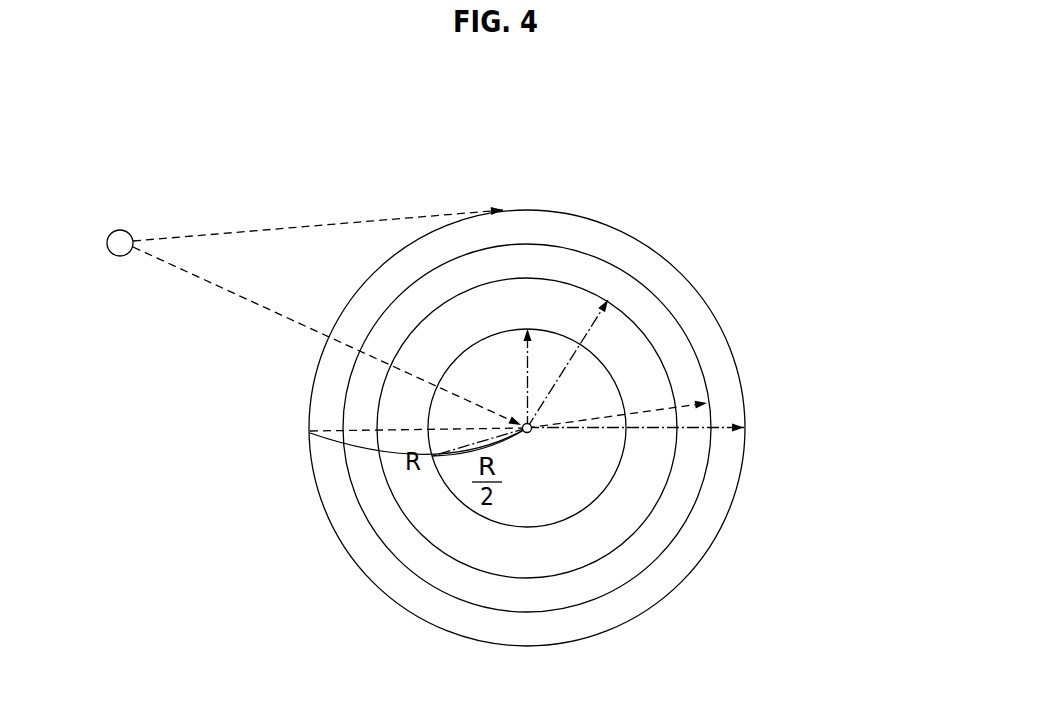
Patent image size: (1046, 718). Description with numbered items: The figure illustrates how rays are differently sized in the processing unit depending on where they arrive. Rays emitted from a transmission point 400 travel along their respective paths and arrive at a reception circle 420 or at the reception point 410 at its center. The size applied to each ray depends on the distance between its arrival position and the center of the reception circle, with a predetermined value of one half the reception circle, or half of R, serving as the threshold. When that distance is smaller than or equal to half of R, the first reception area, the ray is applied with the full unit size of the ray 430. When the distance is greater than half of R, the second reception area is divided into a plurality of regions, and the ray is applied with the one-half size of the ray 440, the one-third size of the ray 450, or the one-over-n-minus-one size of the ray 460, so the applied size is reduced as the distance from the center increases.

The transmission point 400 is at (118, 256).
The reception point 410 is at (617, 472).
The reception circle 420 is at (439, 411).
The '1' size of the ray 430 is at (527, 395).
The '½' size of the ray 440 is at (597, 426).
The '⅓' size of the ray 450 is at (631, 428).
The '1/(n−1)' size of the ray 460 is at (737, 443).